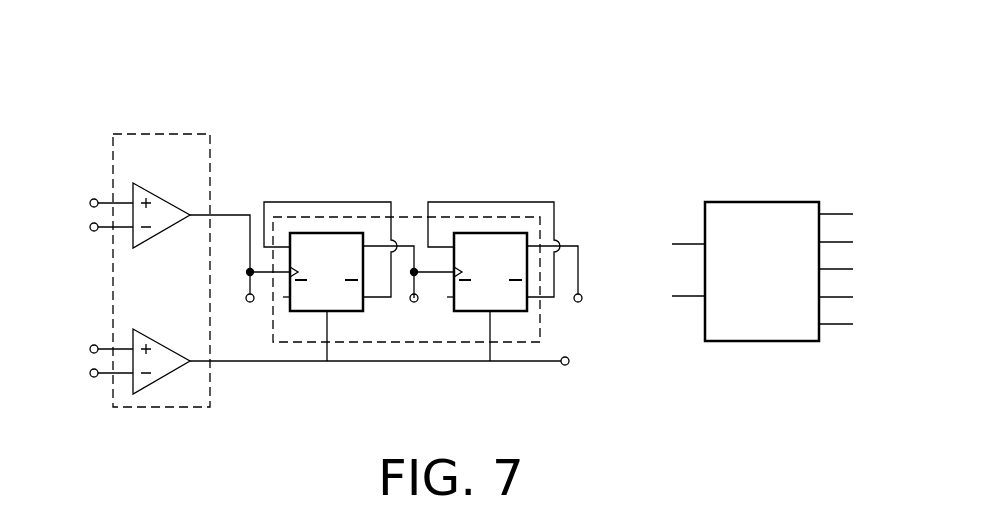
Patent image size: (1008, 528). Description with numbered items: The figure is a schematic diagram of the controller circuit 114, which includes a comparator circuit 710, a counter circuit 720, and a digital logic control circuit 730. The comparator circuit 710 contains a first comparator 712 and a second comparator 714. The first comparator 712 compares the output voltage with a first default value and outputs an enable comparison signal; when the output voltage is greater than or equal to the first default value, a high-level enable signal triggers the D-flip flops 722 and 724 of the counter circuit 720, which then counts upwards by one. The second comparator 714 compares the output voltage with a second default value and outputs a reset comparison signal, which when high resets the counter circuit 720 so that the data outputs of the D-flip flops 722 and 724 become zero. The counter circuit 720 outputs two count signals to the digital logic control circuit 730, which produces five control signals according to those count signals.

The controller circuit 114 is at (895, 440).
The comparator circuit 710 is at (176, 133).
The first comparator 712 is at (161, 188).
The second comparator 714 is at (161, 335).
The counter circuit 720 is at (413, 217).
The D-flip flop 722 is at (330, 232).
The D-flip flop 724 is at (507, 232).
The digital logic control circuit 730 is at (794, 202).